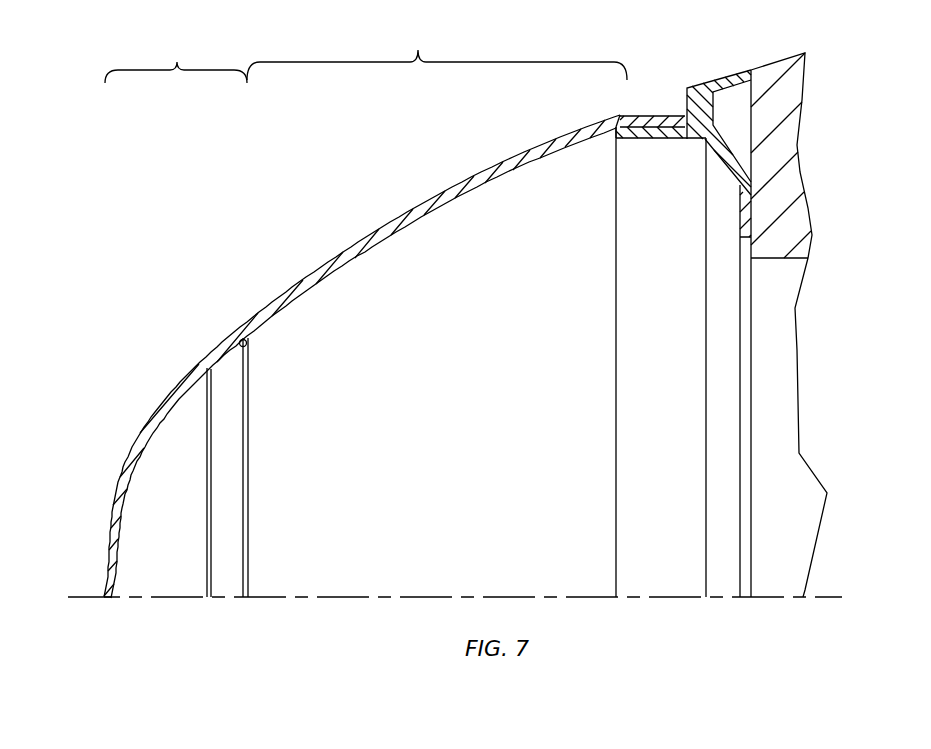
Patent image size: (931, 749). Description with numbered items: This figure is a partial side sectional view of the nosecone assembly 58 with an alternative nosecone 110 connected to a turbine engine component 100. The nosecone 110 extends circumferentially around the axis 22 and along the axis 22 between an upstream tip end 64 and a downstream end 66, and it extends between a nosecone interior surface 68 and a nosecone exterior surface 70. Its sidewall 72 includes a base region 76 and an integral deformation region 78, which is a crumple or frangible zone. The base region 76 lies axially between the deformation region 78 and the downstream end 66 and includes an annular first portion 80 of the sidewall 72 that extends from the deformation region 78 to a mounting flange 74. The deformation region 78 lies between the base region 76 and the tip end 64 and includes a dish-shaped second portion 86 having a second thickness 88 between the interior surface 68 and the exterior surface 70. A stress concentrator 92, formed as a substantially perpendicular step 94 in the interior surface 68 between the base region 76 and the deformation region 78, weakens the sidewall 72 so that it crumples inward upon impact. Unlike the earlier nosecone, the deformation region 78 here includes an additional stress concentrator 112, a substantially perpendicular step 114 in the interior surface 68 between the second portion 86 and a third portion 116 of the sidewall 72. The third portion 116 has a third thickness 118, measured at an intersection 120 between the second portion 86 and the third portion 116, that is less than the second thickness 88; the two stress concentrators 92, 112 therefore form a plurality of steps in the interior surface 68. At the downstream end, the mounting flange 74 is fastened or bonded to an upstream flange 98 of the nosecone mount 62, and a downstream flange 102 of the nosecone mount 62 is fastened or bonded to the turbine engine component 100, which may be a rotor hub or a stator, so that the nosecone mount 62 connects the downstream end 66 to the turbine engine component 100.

The axis 22 is at (835, 590).
The nosecone assembly 58 is at (127, 210).
The nosecone mount 62 is at (700, 84).
The upstream tip end 64 is at (107, 598).
The downstream end 66 is at (694, 139).
The nosecone interior surface 68 is at (493, 178).
The nosecone exterior surface 70 is at (503, 162).
The sidewall 72 is at (425, 202).
The mounting flange 74 is at (660, 116).
The base region 76 is at (437, 50).
The deformation region 78 is at (176, 59).
The first portion 80 is at (377, 244).
The second portion 86 is at (230, 352).
The second thickness 88 is at (210, 332).
The stress concentrator 92 is at (260, 482).
The perpendicular step 94 is at (258, 346).
The upstream flange 98 is at (640, 138).
The turbine engine component 100 is at (800, 127).
The downstream flange 102 is at (740, 213).
The nosecone 110 is at (318, 248).
The additional stress concentrator 112 is at (197, 487).
The perpendicular step 114 is at (200, 425).
The third portion 116 is at (148, 424).
The third thickness 118 is at (162, 390).
The intersection 120 is at (209, 607).